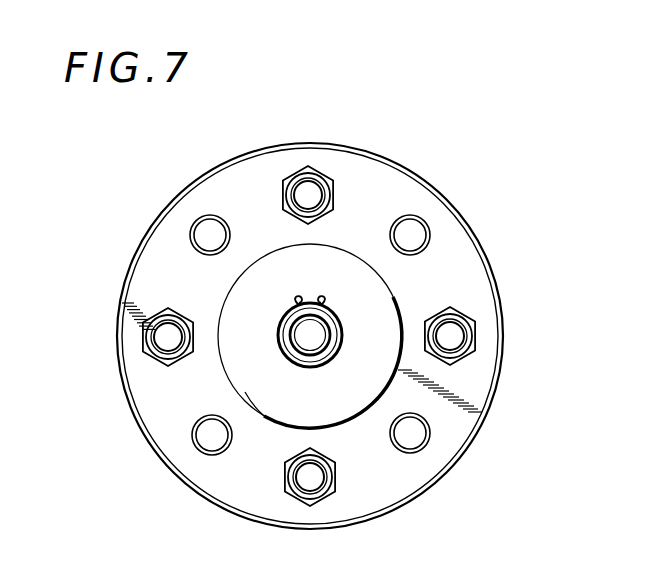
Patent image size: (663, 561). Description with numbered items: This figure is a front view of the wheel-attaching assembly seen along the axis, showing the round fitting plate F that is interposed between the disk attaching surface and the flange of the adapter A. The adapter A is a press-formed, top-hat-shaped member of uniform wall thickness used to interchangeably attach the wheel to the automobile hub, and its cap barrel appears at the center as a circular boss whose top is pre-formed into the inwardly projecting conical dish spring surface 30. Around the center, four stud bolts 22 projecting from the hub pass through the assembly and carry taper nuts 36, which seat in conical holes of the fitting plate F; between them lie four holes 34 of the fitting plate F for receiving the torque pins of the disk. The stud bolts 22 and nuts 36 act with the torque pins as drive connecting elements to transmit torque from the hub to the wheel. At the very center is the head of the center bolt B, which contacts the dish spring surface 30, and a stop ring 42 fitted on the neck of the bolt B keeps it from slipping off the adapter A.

The stud bolts 22 is at (455, 337).
The dish spring surface 30 is at (238, 284).
The holes 34 is at (198, 438).
The taper nuts 36 is at (322, 167).
The stop ring 42 is at (328, 318).
The fitting plate F is at (472, 235).
The adapter A is at (285, 408).
The center bolt B is at (313, 345).